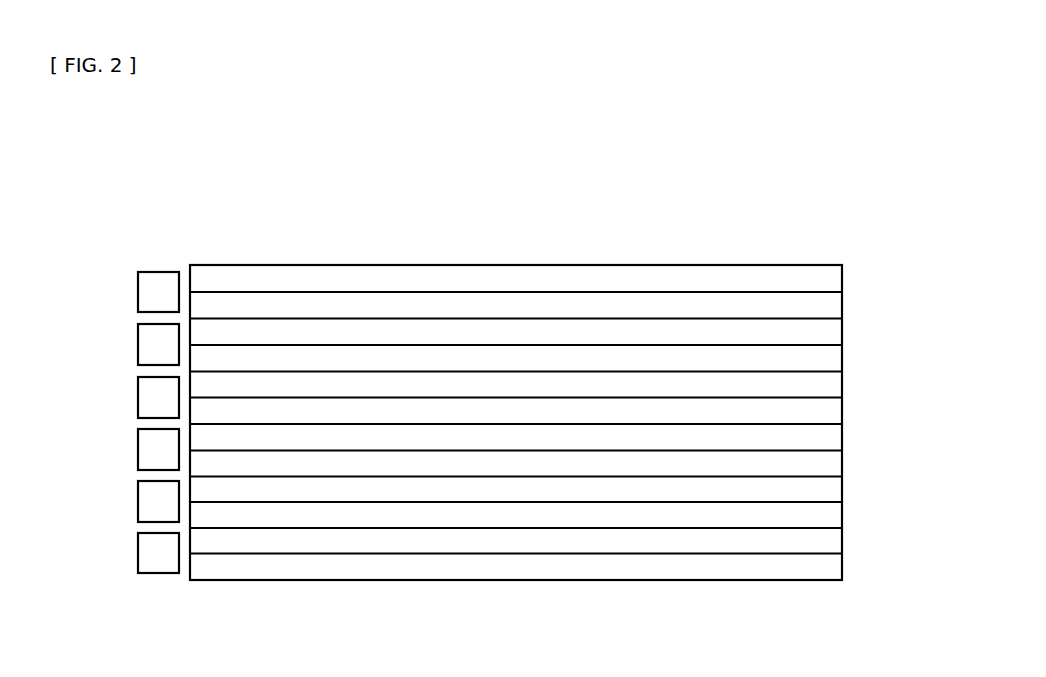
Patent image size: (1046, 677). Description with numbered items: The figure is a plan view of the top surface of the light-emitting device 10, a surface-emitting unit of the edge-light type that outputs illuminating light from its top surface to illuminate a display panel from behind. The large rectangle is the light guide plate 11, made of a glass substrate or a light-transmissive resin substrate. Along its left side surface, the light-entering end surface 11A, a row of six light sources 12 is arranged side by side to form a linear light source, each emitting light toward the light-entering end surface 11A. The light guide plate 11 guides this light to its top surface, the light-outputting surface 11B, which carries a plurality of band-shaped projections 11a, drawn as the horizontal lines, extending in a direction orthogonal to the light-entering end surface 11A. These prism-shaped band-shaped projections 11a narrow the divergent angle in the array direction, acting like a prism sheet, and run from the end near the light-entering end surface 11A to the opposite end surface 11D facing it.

The light-emitting device 10 is at (798, 205).
The light guide plate 11 is at (828, 333).
The band-shaped projections 11a is at (820, 433).
The light-entering end surface 11A is at (193, 543).
The light-outputting surface 11B is at (368, 562).
The end surface 11D is at (848, 537).
The light sources 12 is at (165, 565).